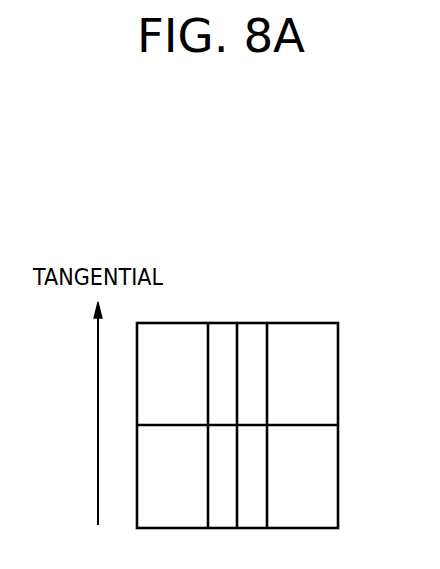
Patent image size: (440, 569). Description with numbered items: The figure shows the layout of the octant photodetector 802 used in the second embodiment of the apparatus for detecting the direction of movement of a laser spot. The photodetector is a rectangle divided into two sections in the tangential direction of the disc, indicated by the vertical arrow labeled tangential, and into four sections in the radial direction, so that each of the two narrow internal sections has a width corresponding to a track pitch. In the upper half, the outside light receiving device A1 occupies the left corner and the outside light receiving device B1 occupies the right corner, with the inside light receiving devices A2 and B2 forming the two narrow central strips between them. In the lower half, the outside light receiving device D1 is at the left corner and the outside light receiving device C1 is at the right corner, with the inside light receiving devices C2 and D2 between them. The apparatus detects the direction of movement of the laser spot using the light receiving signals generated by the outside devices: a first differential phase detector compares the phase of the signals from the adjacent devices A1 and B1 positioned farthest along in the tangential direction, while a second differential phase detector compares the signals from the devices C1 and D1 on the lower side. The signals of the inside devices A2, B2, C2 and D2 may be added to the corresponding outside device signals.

The octant photodetector 802 is at (292, 323).
The light receiving device A1 is at (172, 374).
The light receiving device A2 is at (222, 374).
The light receiving device B1 is at (302, 374).
The light receiving device B2 is at (252, 374).
The light receiving device C1 is at (302, 476).
The light receiving device C2 is at (222, 476).
The light receiving device D1 is at (172, 476).
The light receiving device D2 is at (252, 476).